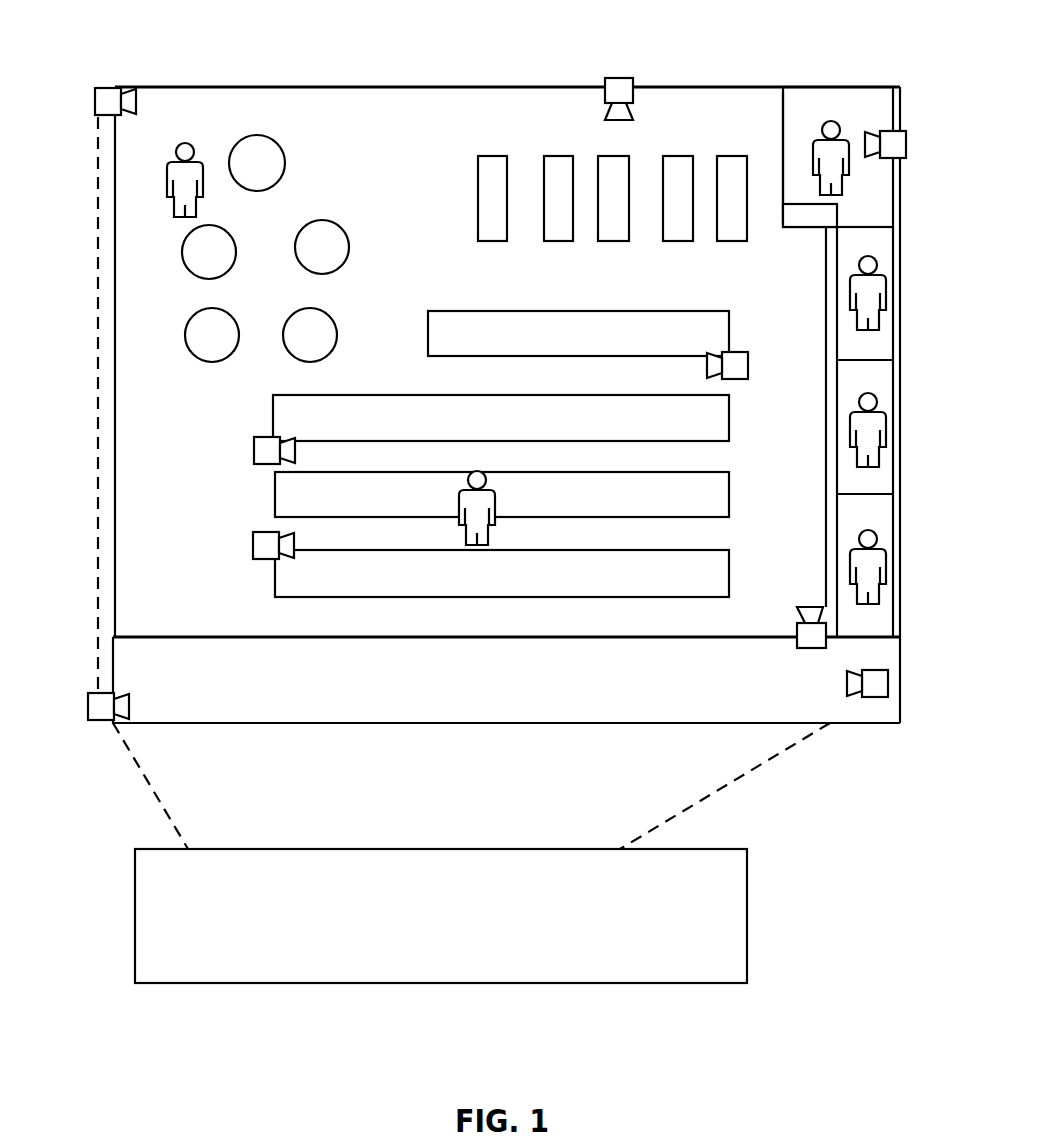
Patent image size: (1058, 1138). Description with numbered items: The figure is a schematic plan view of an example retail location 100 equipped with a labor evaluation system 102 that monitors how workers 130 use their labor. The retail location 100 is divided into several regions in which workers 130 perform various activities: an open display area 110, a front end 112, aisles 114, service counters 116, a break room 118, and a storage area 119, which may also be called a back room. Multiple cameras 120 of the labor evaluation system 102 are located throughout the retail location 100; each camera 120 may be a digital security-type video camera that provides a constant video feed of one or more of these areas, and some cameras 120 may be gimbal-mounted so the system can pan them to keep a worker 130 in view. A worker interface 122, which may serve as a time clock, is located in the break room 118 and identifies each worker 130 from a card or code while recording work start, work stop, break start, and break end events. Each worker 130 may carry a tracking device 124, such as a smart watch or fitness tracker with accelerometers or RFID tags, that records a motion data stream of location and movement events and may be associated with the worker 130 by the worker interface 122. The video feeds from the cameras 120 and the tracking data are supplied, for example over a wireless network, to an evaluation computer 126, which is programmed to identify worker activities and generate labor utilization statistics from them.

The retail location 100 is at (165, 84).
The labor evaluation system 102 is at (119, 56).
The open display area 110 is at (305, 108).
The front end 112 is at (478, 114).
The aisles 114 is at (240, 514).
The service counters 116 is at (782, 570).
The break room 118 is at (828, 96).
The storage area 119 is at (360, 698).
The camera 120 is at (96, 92).
The worker interface 122 is at (838, 215).
The tracking device 124 is at (814, 170).
The evaluation computer 126 is at (510, 849).
The worker 130 is at (191, 142).